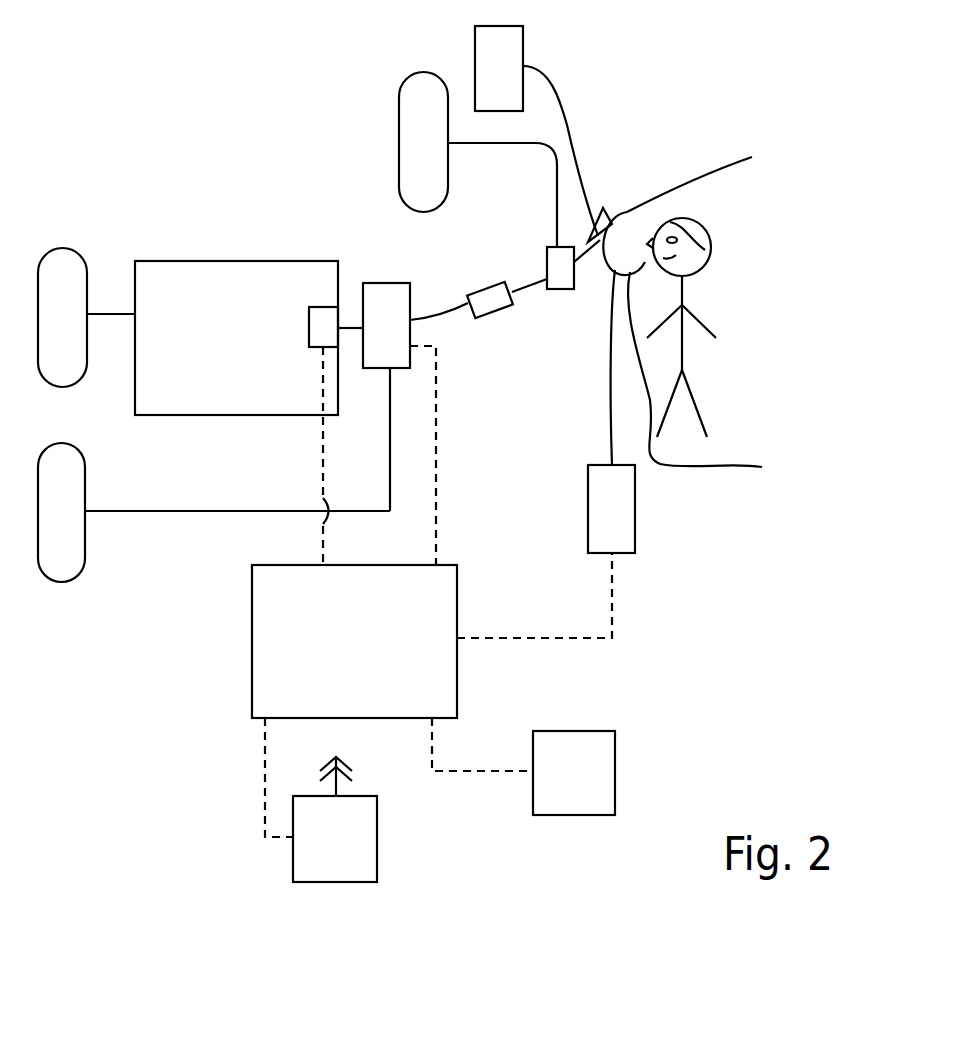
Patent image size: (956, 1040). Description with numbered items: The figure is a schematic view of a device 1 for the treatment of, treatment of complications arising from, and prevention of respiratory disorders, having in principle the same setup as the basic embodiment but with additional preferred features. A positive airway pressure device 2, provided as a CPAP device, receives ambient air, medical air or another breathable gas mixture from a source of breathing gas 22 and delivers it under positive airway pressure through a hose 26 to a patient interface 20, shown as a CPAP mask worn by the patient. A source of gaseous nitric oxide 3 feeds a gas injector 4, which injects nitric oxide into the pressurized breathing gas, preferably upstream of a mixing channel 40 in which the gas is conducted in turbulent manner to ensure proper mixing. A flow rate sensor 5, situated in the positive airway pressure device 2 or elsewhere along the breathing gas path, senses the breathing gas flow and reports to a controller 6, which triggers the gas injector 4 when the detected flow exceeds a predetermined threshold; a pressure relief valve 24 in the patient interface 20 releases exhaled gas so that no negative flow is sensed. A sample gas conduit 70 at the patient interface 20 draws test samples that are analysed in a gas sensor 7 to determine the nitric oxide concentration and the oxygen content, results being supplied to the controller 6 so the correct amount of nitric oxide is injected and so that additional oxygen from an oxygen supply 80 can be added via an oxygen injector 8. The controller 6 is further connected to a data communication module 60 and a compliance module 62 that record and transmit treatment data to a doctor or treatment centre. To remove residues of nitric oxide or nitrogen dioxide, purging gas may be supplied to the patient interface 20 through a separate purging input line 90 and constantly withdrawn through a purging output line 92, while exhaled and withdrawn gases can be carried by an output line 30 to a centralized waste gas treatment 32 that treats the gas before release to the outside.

The device for the treatment of respiratory disorders 1 is at (195, 243).
The positive airway pressure device 2 is at (245, 350).
The source of gaseous nitric oxide 3 is at (69, 528).
The gas injector 4 is at (395, 339).
The flow rate sensor 5 is at (323, 318).
The controller 6 is at (363, 658).
The gas sensor 7 is at (620, 521).
The oxygen injector 8 is at (563, 290).
The patient interface 20 is at (628, 210).
The source of breathing gas 22 is at (78, 331).
The pressure relief valve 24 is at (604, 212).
The hose 26 is at (452, 315).
The output line 30 is at (563, 116).
The waste gas treatment 32 is at (515, 79).
The mixing channel 40 is at (489, 292).
The data communication module 60 is at (351, 851).
The compliance module 62 is at (590, 786).
The sample gas conduit 70 is at (607, 375).
The oxygen supply 80 is at (439, 156).
The purging input line 90 is at (741, 166).
The purging output line 92 is at (695, 463).